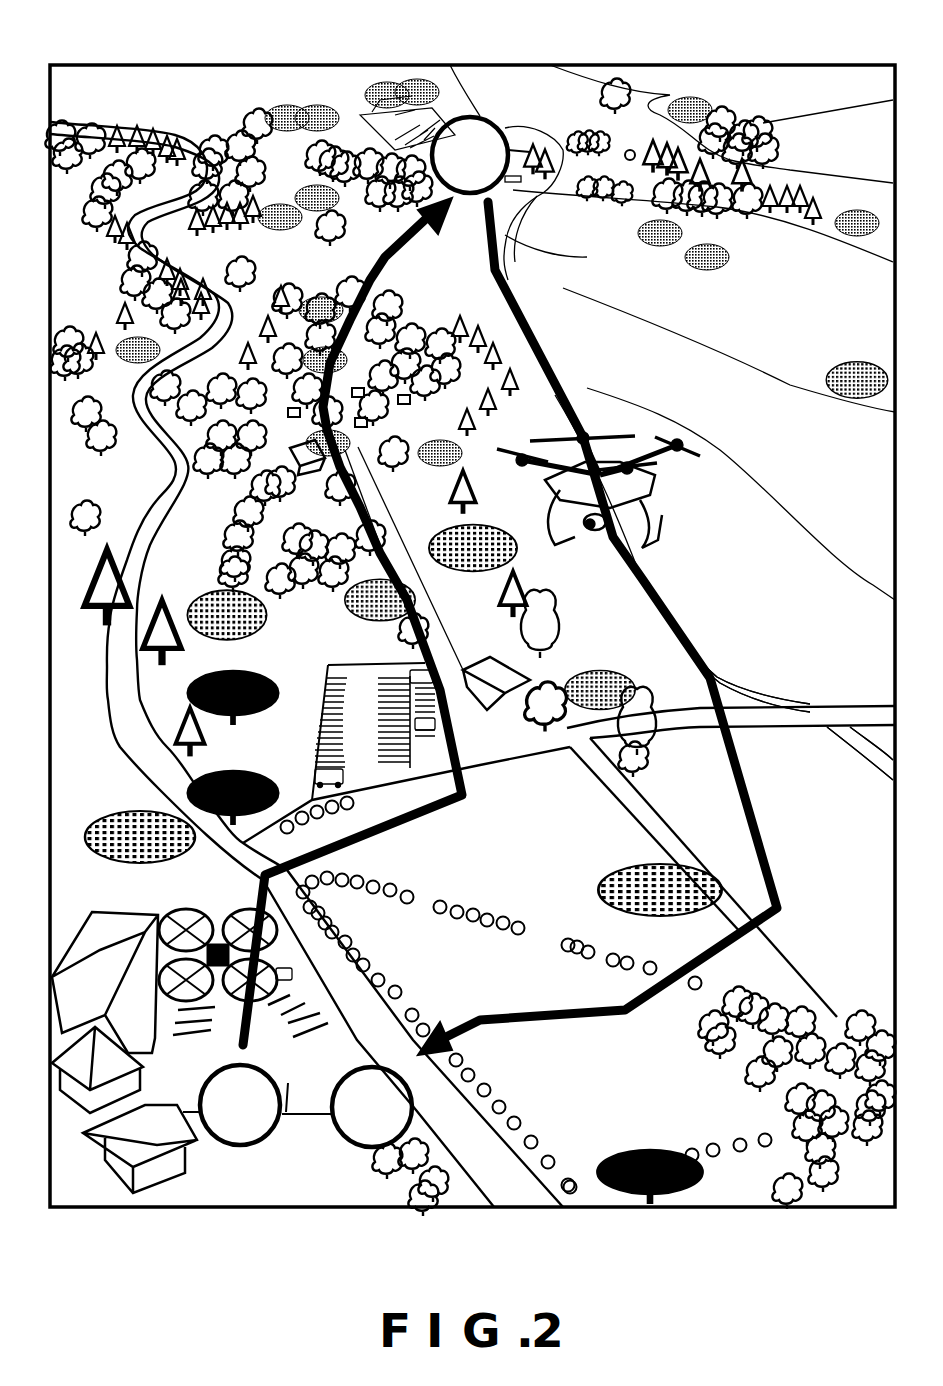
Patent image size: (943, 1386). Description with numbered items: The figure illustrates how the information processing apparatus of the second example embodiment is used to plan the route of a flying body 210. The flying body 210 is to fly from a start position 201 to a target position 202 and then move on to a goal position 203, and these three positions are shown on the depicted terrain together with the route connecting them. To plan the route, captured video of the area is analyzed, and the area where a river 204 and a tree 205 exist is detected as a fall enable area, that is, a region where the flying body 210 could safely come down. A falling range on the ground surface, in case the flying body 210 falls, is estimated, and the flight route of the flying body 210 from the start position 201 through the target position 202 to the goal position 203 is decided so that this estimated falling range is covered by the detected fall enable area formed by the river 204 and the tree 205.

The start position 201 is at (238, 1148).
The target position 202 is at (481, 117).
The goal position 203 is at (365, 1150).
The river 204 is at (730, 676).
The tree 205 is at (400, 634).
The flying body 210 is at (635, 455).